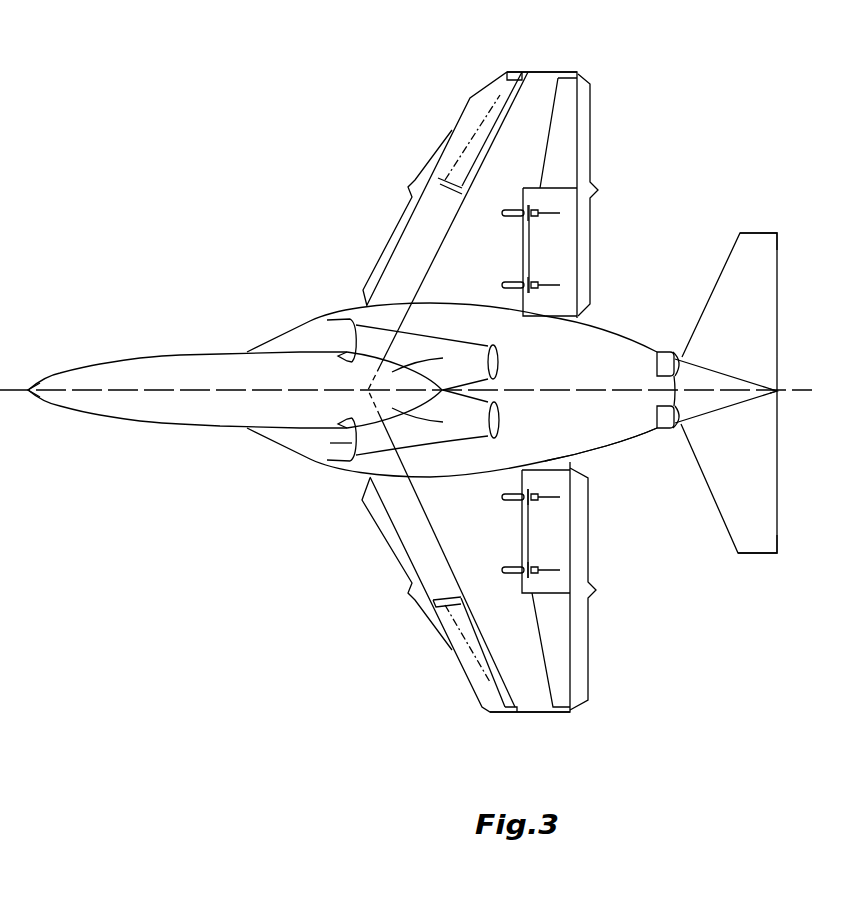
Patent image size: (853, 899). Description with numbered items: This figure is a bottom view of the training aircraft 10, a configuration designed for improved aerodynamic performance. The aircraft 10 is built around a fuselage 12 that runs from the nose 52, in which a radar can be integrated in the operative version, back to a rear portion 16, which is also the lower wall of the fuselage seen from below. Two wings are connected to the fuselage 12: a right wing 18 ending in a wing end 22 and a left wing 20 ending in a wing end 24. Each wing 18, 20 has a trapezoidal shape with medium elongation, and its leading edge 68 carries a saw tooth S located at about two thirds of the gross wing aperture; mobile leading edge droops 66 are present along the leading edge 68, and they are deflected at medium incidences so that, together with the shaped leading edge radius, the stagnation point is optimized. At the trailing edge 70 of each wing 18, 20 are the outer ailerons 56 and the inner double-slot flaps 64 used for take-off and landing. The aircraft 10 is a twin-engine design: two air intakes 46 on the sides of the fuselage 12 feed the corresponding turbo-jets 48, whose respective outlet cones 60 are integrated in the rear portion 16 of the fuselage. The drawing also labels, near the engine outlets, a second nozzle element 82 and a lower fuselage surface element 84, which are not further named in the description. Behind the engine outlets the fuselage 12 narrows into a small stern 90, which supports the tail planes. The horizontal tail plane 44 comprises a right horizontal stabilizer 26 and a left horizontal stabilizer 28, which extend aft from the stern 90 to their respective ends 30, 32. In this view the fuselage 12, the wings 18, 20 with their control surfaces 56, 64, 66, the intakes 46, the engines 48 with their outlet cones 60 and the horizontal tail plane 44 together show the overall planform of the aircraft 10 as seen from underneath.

The aircraft 10 is at (221, 536).
The fuselage 12 is at (178, 428).
The lower wall / rear portion of fuselage 16 is at (610, 357).
The right wing 18 is at (503, 632).
The left wing 20 is at (508, 133).
The wing end 22 is at (556, 713).
The wing end 24 is at (550, 72).
The right horizontal stabilizer 26 is at (760, 487).
The left horizontal stabilizer 28 is at (772, 291).
The end of right horizontal stabilizer 30 is at (751, 556).
The end of left horizontal stabilizer 32 is at (770, 233).
The horizontal tail plane 44 is at (752, 224).
The air intake 46 is at (346, 343).
The turbo-jet 48 is at (478, 408).
The nose 52 is at (33, 393).
The outer aileron 56 is at (568, 117).
The outlet cone 60 is at (673, 356).
The inner flap for take-off and landing 64 is at (565, 250).
The mobile leading edge (leading edge droop) 66 is at (473, 153).
The leading edge 68 is at (426, 180).
The trailing edge 70 is at (602, 392).
The lower exhaust nozzle 82 is at (675, 430).
The fuselage lower surface 84 is at (613, 450).
The small stern 90 is at (778, 391).
The saw tooth S is at (440, 179).